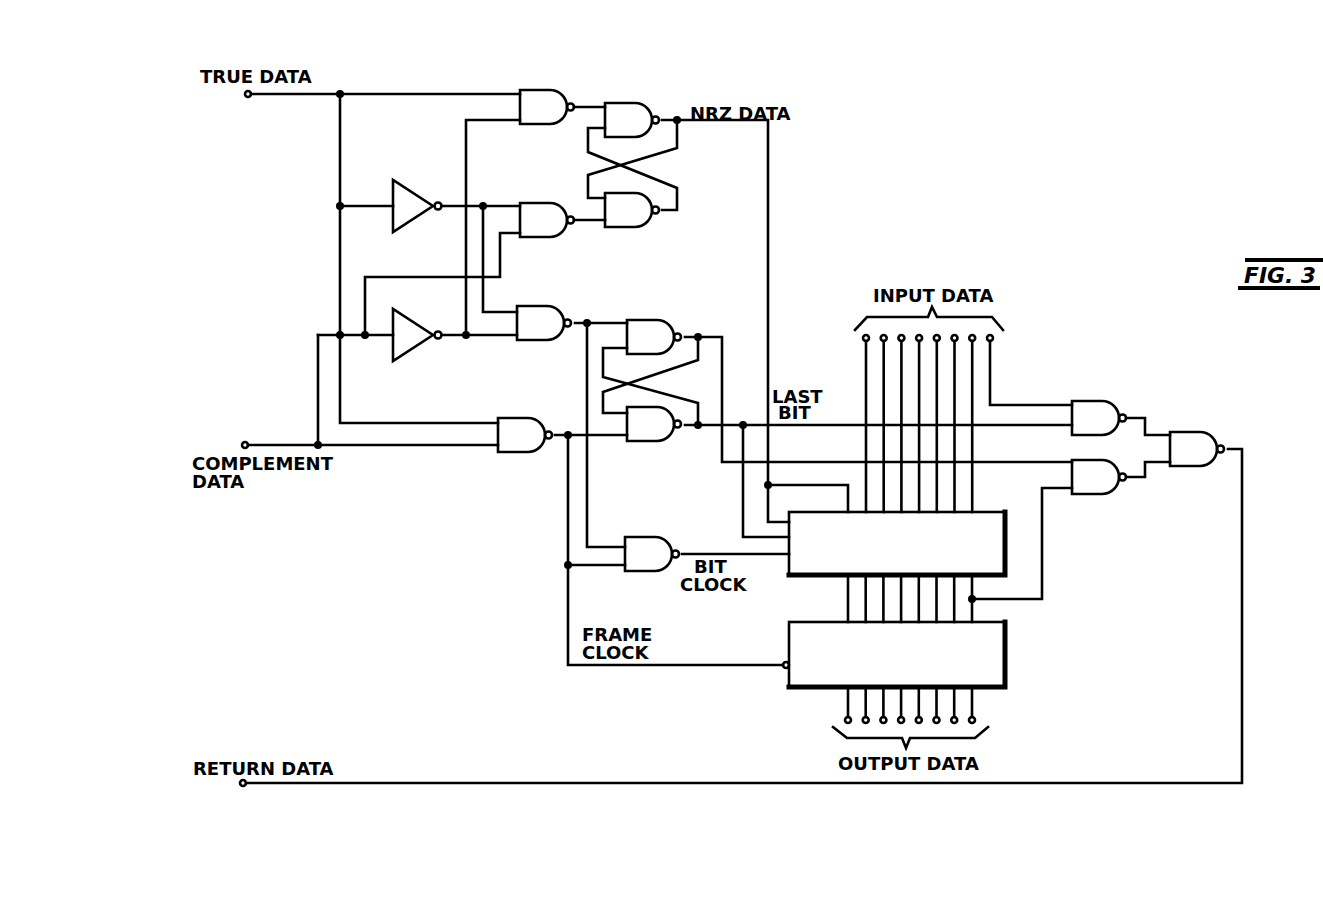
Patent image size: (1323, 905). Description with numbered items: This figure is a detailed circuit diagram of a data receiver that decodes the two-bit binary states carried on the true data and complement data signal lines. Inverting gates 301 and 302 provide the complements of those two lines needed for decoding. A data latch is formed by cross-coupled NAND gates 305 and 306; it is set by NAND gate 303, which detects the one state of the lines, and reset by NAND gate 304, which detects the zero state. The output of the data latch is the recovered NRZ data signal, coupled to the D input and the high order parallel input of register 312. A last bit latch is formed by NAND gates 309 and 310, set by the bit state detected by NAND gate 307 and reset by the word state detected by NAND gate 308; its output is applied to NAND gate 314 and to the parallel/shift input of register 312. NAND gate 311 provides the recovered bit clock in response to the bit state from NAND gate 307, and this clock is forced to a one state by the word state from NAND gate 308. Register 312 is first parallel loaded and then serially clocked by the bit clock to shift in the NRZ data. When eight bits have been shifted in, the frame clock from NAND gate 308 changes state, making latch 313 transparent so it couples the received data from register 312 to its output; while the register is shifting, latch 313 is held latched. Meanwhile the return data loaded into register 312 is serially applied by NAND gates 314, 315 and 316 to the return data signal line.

The inverting gate 301 is at (412, 196).
The inverting gate 302 is at (412, 330).
The NAND gate 303 is at (531, 96).
The NAND gate 304 is at (546, 208).
The NAND gate 305 is at (620, 112).
The NAND gate 306 is at (626, 226).
The NAND gate 307 is at (529, 315).
The NAND gate 308 is at (512, 426).
The NAND gate 309 is at (640, 330).
The NAND gate 310 is at (651, 441).
The NAND gate 311 is at (639, 546).
The register 312 is at (974, 516).
The latch 313 is at (1003, 657).
The NAND gate 314 is at (1084, 409).
The NAND gate 315 is at (1090, 495).
The NAND gate 316 is at (1182, 439).